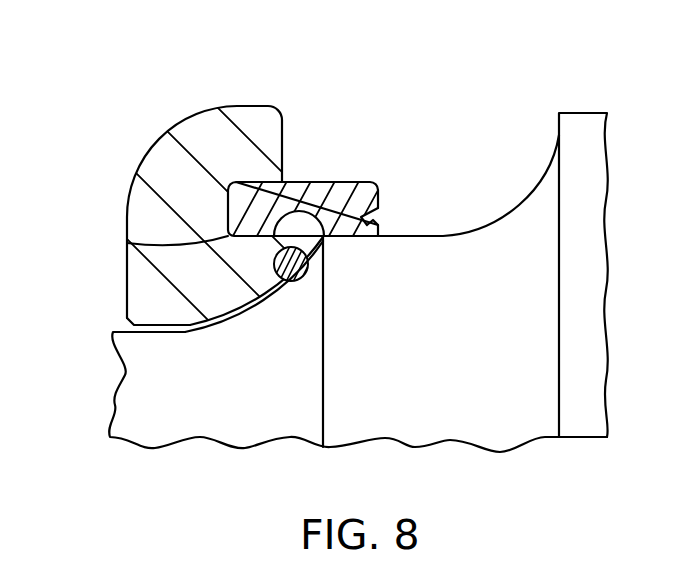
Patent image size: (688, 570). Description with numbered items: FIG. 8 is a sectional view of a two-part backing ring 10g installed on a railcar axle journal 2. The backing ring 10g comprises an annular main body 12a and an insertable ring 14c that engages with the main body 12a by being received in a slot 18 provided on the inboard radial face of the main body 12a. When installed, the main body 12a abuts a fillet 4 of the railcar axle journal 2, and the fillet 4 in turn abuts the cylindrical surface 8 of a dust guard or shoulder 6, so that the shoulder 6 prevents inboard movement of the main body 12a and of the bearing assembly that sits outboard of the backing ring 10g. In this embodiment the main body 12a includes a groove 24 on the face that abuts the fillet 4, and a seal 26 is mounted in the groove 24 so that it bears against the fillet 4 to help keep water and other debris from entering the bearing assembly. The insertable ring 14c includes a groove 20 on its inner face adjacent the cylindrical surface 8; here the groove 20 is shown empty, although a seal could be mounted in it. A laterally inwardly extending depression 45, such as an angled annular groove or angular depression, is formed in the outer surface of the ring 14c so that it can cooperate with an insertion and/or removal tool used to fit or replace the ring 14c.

The two-part backing ring 10g is at (70, 76).
The main body 12a is at (168, 158).
The insertable ring 14c is at (290, 195).
The slot 18 is at (127, 243).
The groove 20 is at (330, 184).
The laterally inwardly extending depression 45 is at (382, 208).
The groove 24 is at (293, 268).
The seal 26 is at (309, 262).
The cylindrical surface 8 is at (419, 236).
The dust guard or shoulder 6 is at (533, 333).
The railcar axle journal 2 is at (143, 392).
The fillet 4 is at (224, 323).